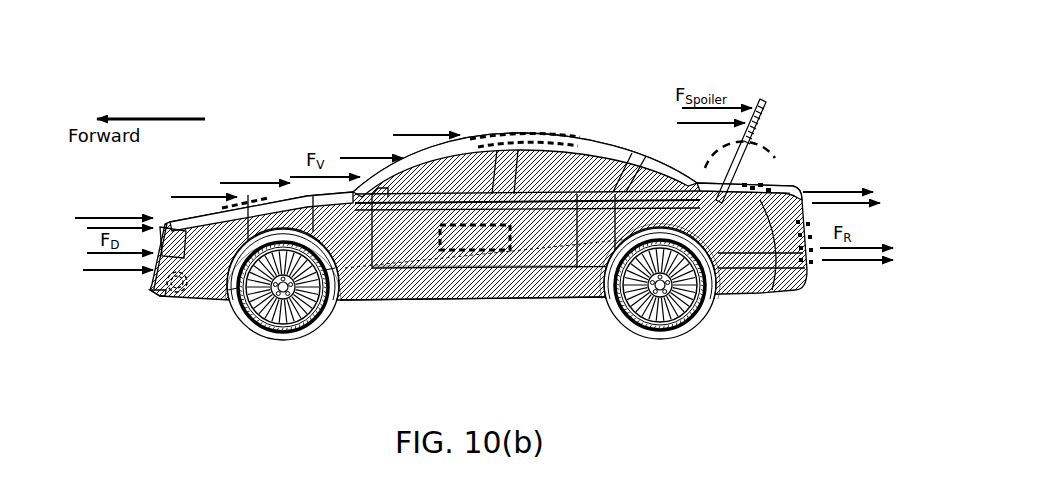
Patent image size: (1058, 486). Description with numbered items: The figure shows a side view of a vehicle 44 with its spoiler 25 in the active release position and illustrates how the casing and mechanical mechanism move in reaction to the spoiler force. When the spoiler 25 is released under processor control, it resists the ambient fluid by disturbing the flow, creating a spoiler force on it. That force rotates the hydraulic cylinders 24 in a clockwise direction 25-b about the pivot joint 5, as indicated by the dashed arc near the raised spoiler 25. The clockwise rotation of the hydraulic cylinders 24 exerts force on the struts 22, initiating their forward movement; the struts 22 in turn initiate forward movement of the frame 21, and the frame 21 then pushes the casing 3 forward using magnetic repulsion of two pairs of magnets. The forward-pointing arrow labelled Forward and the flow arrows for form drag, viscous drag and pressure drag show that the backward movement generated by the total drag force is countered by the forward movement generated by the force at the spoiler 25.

The vehicle 44 is at (352, 95).
The casing 3 is at (149, 326).
The frame 21 is at (173, 293).
The struts 22 is at (347, 270).
The hydraulic cylinders 24 is at (712, 227).
The pivot joint 5 is at (704, 195).
The spoiler 25 is at (770, 97).
The clockwise rotation direction 25-b is at (767, 168).